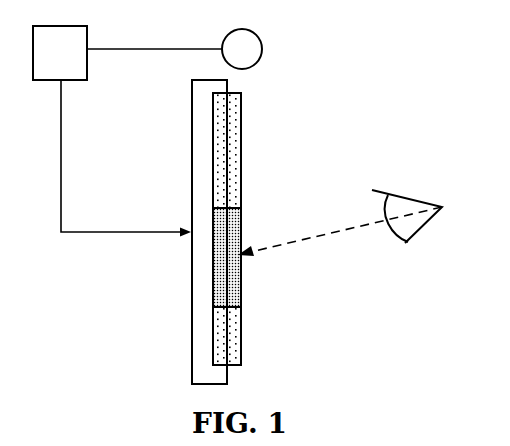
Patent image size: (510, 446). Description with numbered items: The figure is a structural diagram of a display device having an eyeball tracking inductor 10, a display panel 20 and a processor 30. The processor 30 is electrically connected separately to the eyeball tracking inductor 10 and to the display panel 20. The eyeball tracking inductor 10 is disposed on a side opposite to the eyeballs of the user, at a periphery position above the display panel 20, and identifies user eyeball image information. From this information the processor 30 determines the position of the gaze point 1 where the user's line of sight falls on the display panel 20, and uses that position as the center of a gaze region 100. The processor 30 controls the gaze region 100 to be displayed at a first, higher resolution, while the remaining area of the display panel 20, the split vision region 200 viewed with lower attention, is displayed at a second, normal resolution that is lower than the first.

The gaze point 1 is at (242, 262).
The eyeball tracking inductor 10 is at (259, 45).
The display panel 20 is at (242, 96).
The processor 30 is at (88, 64).
The gaze region 100 is at (241, 213).
The split vision region 200 is at (241, 152).